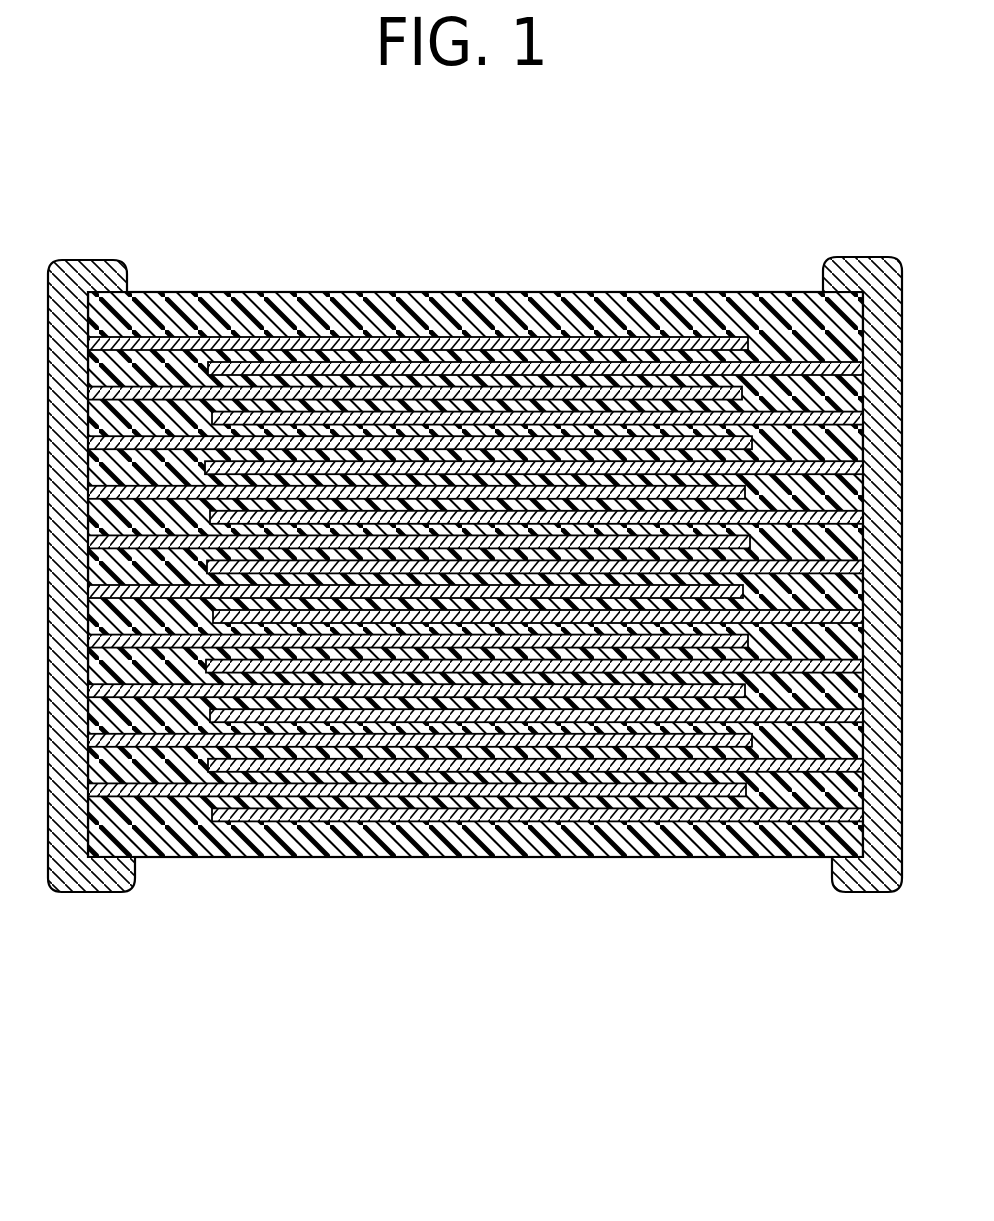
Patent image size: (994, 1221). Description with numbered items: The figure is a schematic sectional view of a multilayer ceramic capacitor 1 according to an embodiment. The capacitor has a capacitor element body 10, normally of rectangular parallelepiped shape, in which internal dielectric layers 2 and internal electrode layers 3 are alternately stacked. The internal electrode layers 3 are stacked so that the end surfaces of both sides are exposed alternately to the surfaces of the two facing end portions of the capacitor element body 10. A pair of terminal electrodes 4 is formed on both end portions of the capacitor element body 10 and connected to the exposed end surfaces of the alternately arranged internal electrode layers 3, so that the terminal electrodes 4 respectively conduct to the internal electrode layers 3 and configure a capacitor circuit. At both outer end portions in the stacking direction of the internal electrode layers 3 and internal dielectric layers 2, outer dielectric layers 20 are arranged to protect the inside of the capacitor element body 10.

The multilayer ceramic capacitor 1 is at (475, 615).
The internal dielectric layer 2 is at (332, 312).
The internal electrode layer 3 is at (520, 318).
The terminal electrode 4 is at (860, 270).
The capacitor element body 10 is at (475, 583).
The outer dielectric layer 20 is at (425, 322).